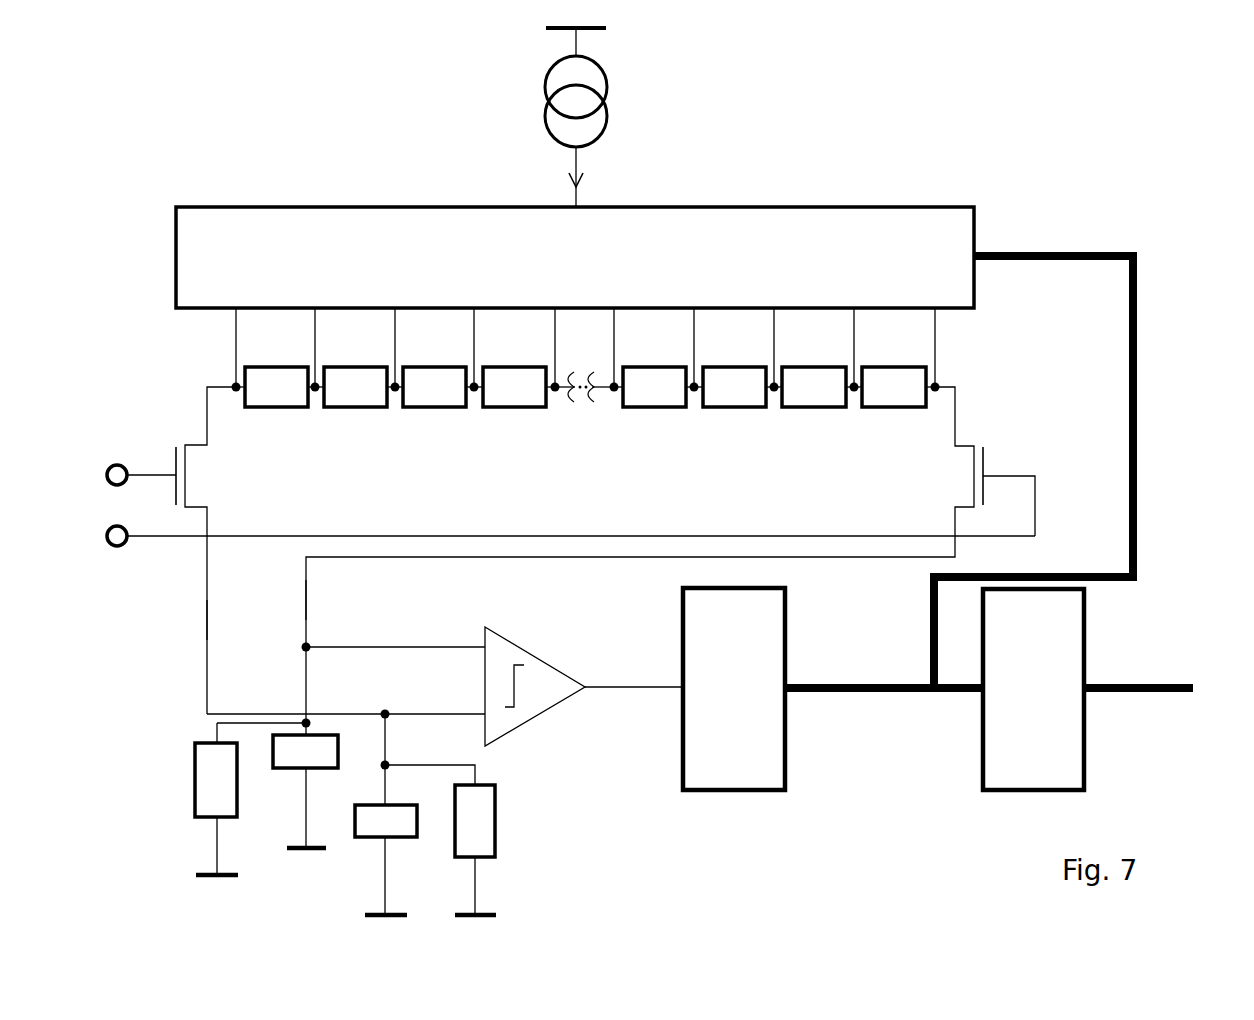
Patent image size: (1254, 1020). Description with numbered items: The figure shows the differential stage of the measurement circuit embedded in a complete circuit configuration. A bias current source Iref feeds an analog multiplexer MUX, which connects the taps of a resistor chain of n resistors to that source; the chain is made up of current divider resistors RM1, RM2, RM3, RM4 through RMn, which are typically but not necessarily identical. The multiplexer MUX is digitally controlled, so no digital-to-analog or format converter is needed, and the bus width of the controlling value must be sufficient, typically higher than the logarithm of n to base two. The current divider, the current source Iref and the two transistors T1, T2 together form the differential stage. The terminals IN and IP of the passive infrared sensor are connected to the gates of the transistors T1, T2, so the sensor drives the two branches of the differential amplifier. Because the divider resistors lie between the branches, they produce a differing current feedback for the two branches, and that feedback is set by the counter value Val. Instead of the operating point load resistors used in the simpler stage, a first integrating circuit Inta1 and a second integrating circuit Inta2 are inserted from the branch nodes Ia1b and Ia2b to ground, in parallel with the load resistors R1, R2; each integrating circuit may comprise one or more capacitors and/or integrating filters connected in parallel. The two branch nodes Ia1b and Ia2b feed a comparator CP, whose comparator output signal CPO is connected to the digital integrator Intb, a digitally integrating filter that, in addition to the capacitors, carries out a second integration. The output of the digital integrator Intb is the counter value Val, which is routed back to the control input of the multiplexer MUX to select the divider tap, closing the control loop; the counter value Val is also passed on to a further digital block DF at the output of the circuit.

The bias current source Iref is at (588, 117).
The analog multiplexer MUX is at (575, 257).
The current divider resistor RM1 is at (275, 409).
The current divider resistor RM2 is at (355, 409).
The current divider resistor RM3 is at (434, 409).
The current divider resistor RM4 is at (514, 409).
The current divider resistor RMn is at (894, 409).
The transistor T1 is at (182, 550).
The transistor T2 is at (670, 561).
The terminal of the passive infrared sensor IN is at (86, 476).
The terminal of the passive infrared sensor IP is at (541, 537).
The node Ia1b is at (182, 620).
The node Ia2b is at (336, 600).
The comparator CP is at (396, 672).
The comparator output signal CPO is at (634, 708).
The digital integrator Intb is at (734, 689).
The counter value Val is at (989, 472).
The digital filter DF is at (1033, 689).
The load resistor R1 is at (460, 840).
The load resistor R2 is at (194, 799).
The first integrating circuit Inta1 is at (408, 840).
The second integrating circuit Inta2 is at (273, 768).